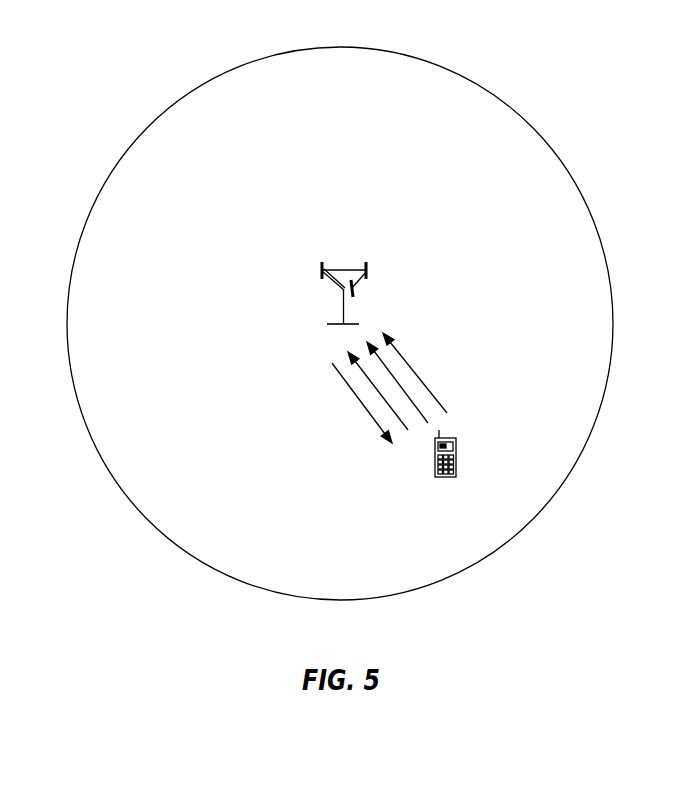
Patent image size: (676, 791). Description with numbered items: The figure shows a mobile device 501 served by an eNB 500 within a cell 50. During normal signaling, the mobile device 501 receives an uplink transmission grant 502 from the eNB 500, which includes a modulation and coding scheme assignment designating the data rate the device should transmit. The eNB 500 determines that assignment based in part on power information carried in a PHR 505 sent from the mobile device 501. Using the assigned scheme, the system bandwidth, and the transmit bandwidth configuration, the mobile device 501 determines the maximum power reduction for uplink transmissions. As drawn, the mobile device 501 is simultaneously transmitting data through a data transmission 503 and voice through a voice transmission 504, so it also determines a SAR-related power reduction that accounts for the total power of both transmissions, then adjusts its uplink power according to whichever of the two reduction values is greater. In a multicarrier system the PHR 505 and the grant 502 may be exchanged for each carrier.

The cell 50 is at (474, 43).
The eNB 500 is at (357, 253).
The mobile device 501 is at (443, 485).
The uplink transmission grant 502 is at (340, 378).
The data transmission 503 is at (410, 363).
The voice transmission 504 is at (412, 402).
The PHR 505 is at (403, 420).